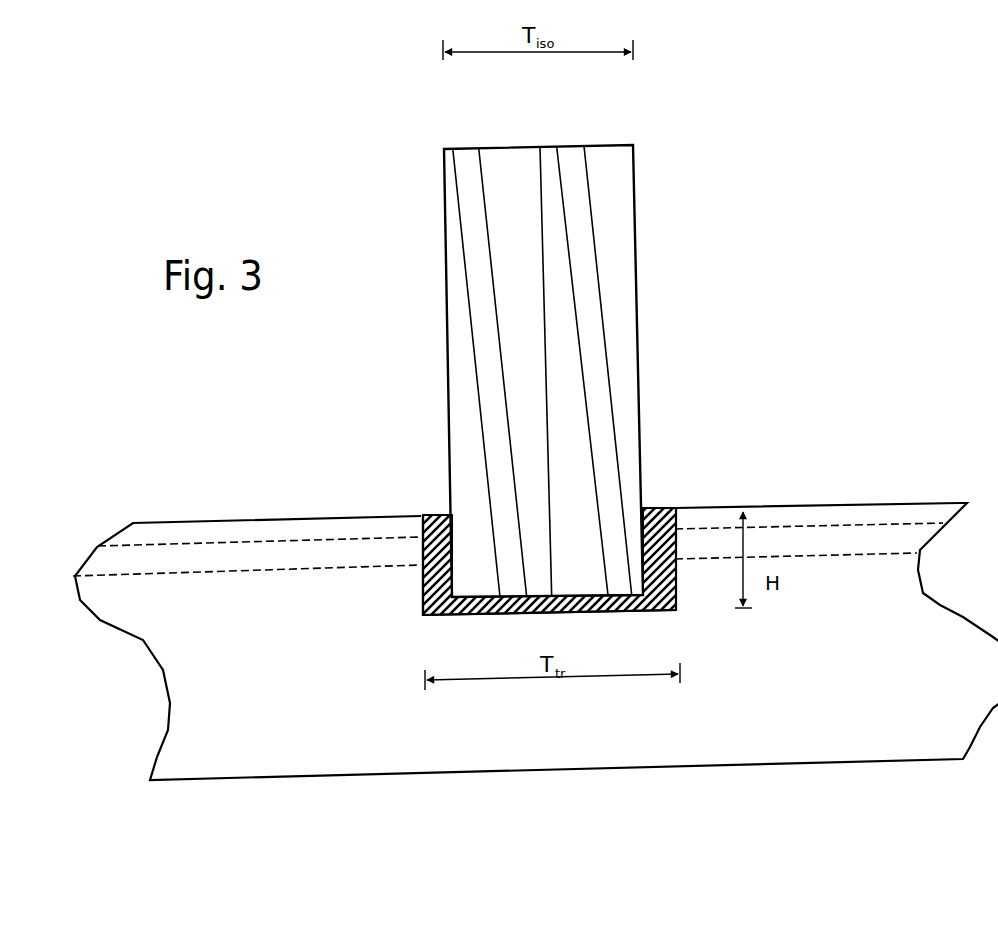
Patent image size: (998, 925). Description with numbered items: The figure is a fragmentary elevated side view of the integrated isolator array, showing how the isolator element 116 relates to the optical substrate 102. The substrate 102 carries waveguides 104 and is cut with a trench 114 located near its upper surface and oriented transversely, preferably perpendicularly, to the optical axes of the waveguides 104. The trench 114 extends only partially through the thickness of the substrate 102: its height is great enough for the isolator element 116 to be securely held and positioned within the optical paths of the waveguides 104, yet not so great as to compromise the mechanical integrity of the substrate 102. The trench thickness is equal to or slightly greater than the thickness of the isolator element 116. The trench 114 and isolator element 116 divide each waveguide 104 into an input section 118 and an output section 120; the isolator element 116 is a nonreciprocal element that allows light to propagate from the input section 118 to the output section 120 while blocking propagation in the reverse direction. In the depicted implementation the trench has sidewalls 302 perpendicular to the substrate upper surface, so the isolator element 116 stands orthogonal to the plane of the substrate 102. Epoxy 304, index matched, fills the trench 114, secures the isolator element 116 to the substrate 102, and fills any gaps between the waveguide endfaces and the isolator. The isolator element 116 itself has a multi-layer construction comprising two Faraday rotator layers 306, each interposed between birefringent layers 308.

The substrate 102 is at (330, 730).
The waveguides 104 is at (185, 557).
The trench 114 is at (675, 573).
The isolator element 116 is at (638, 343).
The input section 118 is at (262, 553).
The output section 120 is at (852, 535).
The sidewalls 302 is at (675, 518).
The epoxy 304 is at (433, 517).
The Faraday rotator layers 306 is at (467, 160).
The birefringent layers 308 is at (450, 262).